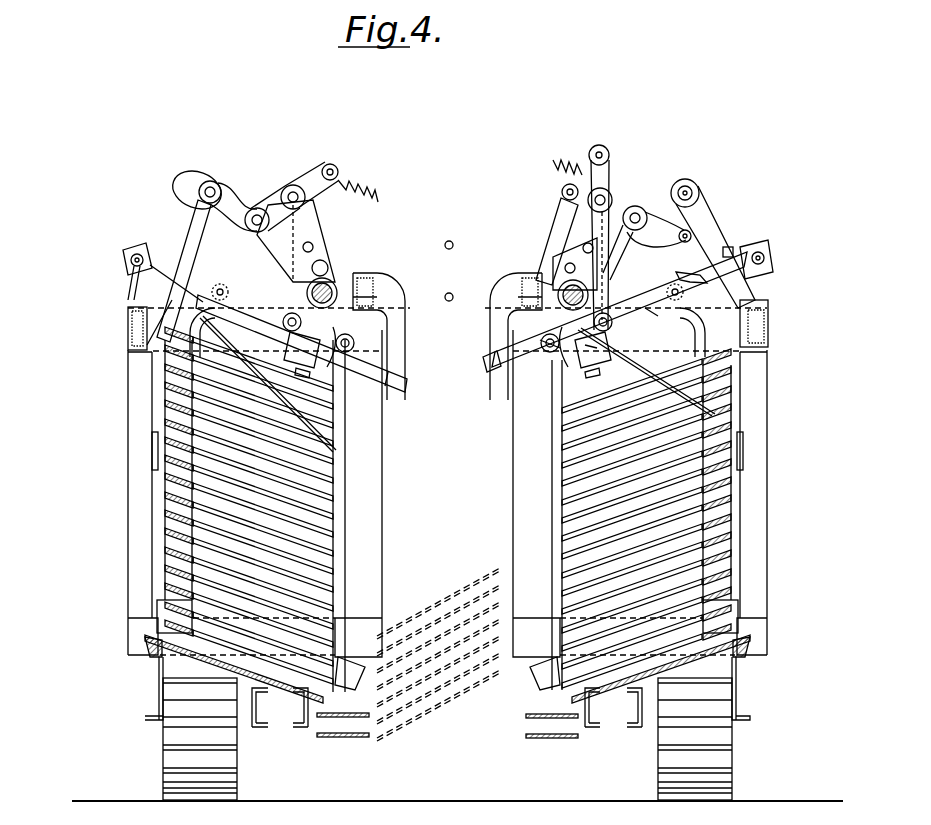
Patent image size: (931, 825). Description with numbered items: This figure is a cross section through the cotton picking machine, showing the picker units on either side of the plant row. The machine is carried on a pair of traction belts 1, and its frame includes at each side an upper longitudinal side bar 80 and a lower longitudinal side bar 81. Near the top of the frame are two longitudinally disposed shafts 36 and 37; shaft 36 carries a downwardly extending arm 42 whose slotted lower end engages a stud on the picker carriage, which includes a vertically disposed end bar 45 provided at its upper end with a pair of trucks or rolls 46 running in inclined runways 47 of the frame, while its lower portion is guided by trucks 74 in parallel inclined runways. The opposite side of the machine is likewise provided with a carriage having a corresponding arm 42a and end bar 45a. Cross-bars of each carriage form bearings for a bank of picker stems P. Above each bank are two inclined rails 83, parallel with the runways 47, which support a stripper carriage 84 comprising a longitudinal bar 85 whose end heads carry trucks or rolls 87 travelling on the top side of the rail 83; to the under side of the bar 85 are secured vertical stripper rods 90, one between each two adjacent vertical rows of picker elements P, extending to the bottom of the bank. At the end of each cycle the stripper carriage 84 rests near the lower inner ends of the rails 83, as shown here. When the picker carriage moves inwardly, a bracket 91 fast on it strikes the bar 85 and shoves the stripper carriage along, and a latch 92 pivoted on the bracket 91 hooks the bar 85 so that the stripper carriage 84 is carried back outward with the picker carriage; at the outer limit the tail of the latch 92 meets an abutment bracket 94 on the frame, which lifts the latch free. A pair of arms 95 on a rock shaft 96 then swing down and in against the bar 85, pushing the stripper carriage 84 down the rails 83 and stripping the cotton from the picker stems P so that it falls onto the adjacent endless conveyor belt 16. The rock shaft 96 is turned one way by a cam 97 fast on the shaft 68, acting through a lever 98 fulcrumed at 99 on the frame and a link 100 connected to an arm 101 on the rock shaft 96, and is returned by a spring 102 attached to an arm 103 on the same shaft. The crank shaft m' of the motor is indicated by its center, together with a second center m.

The traction belt 1 is at (185, 767).
The endless conveyor belt 16 is at (339, 718).
The shaft 36 is at (548, 281).
The shaft 37 is at (349, 282).
The arm 42 is at (633, 344).
The rock bar 42a is at (262, 345).
The vertical end bar 45 is at (740, 497).
The chain 45a is at (160, 518).
The trucks or rolls 46 is at (668, 290).
The inclined runways 47 is at (520, 343).
The shaft 68 is at (695, 183).
The trucks 74 is at (541, 678).
The upper longitudinal side bar 80 is at (765, 330).
The lower longitudinal side bar 81 is at (158, 672).
The inclined rails 83 is at (657, 314).
The stripper carriage 84 is at (592, 350).
The bar 85 is at (522, 386).
The trucks or rolls 87 is at (575, 352).
The stripper rods 90 is at (342, 451).
The bracket 91 is at (727, 247).
The latch 92 is at (683, 273).
The abutment bracket 94 is at (749, 246).
The arms 95 is at (606, 285).
The rock shaft 96 is at (607, 195).
The cam 97 is at (702, 194).
The lever 98 is at (660, 225).
The fulcrum 99 is at (636, 212).
The link 100 is at (565, 200).
The arm 101 is at (577, 183).
The spring 102 is at (584, 160).
The arm 103 is at (604, 155).
The center m is at (457, 218).
The crank shaft m' is at (468, 274).
The picker stems P is at (335, 575).